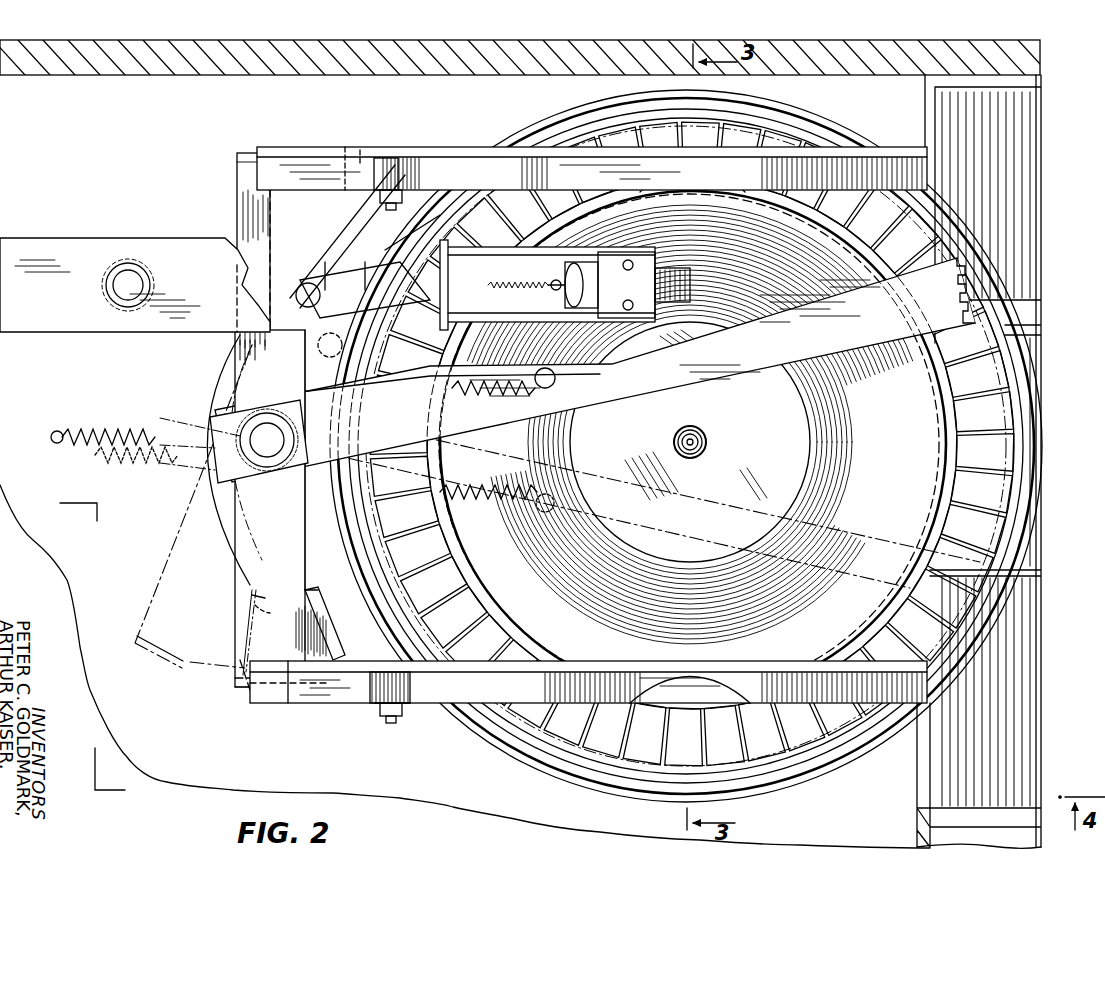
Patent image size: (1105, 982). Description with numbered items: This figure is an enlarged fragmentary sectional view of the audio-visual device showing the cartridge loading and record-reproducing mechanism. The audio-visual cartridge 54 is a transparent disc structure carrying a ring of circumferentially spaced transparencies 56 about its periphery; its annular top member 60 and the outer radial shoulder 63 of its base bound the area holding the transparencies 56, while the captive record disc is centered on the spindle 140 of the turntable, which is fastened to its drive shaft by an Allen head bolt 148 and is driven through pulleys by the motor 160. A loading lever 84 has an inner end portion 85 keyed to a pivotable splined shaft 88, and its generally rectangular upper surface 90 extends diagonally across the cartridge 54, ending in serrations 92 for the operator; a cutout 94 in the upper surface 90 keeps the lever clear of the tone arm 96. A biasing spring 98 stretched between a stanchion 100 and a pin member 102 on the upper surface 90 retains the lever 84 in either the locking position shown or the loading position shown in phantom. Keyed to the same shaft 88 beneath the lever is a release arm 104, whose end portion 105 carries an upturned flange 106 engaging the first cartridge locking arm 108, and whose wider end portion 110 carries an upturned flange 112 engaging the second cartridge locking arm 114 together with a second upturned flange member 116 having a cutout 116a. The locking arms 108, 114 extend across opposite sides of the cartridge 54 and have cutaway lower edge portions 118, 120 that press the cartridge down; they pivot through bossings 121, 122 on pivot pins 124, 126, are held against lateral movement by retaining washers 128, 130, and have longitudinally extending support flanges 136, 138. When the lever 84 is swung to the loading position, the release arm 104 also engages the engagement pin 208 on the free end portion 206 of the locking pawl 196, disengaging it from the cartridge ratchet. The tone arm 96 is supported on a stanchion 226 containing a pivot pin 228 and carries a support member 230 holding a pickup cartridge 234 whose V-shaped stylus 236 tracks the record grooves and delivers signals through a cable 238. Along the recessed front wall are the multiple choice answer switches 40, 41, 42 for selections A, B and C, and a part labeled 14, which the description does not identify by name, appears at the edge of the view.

The housing wall 14 is at (1041, 326).
The answer switch 40 is at (1022, 726).
The answer switch 41 is at (1037, 542).
The answer switch 42 is at (1028, 218).
The audio-visual cartridge 54 is at (524, 749).
The transparencies 56 is at (615, 745).
The annular top member 60 is at (518, 614).
The outer radial shoulder 63 is at (826, 762).
The loading lever 84 is at (856, 352).
The inner end portion 85 is at (212, 432).
The splined shaft 88 is at (258, 445).
The upper surface 90 is at (810, 297).
The serrations 92 is at (973, 270).
The cutout 94 is at (757, 318).
The tone arm 96 is at (577, 310).
The biasing spring 98 is at (493, 385).
The stanchion 100 is at (58, 430).
The pin member 102 is at (546, 390).
The release arm 104 is at (228, 586).
The end portion 105 is at (240, 205).
The upturned flange 106 is at (248, 153).
The first cartridge locking arm 108 is at (313, 145).
The end portion 110 is at (234, 562).
The upturned flange 112 is at (245, 688).
The second cartridge locking arm 114 is at (305, 707).
The second upturned flange member 116 is at (320, 606).
The cutout 116a is at (292, 645).
The cutaway lower edge portion 118 is at (713, 180).
The cutaway lower edge portion 120 is at (700, 678).
The bossing 121 is at (395, 160).
The bossing 122 is at (373, 694).
The pivot pin 124 is at (415, 200).
The pivot pin 126 is at (390, 724).
The retaining washer 128 is at (348, 210).
The retaining washer 130 is at (402, 706).
The support flange 136 is at (348, 157).
The support flange 138 is at (590, 665).
The spindle 140 is at (700, 436).
The Allen head bolt 148 is at (680, 438).
The motor 160 is at (290, 363).
The locking pawl 196 is at (388, 253).
The free end portion 206 is at (362, 268).
The engagement pin 208 is at (306, 288).
The stanchion 226 is at (124, 308).
The pivot pin 228 is at (128, 265).
The support member 230 is at (593, 256).
The cartridge 234 is at (583, 316).
The V-shaped stylus 236 is at (690, 283).
The cable 238 is at (512, 288).